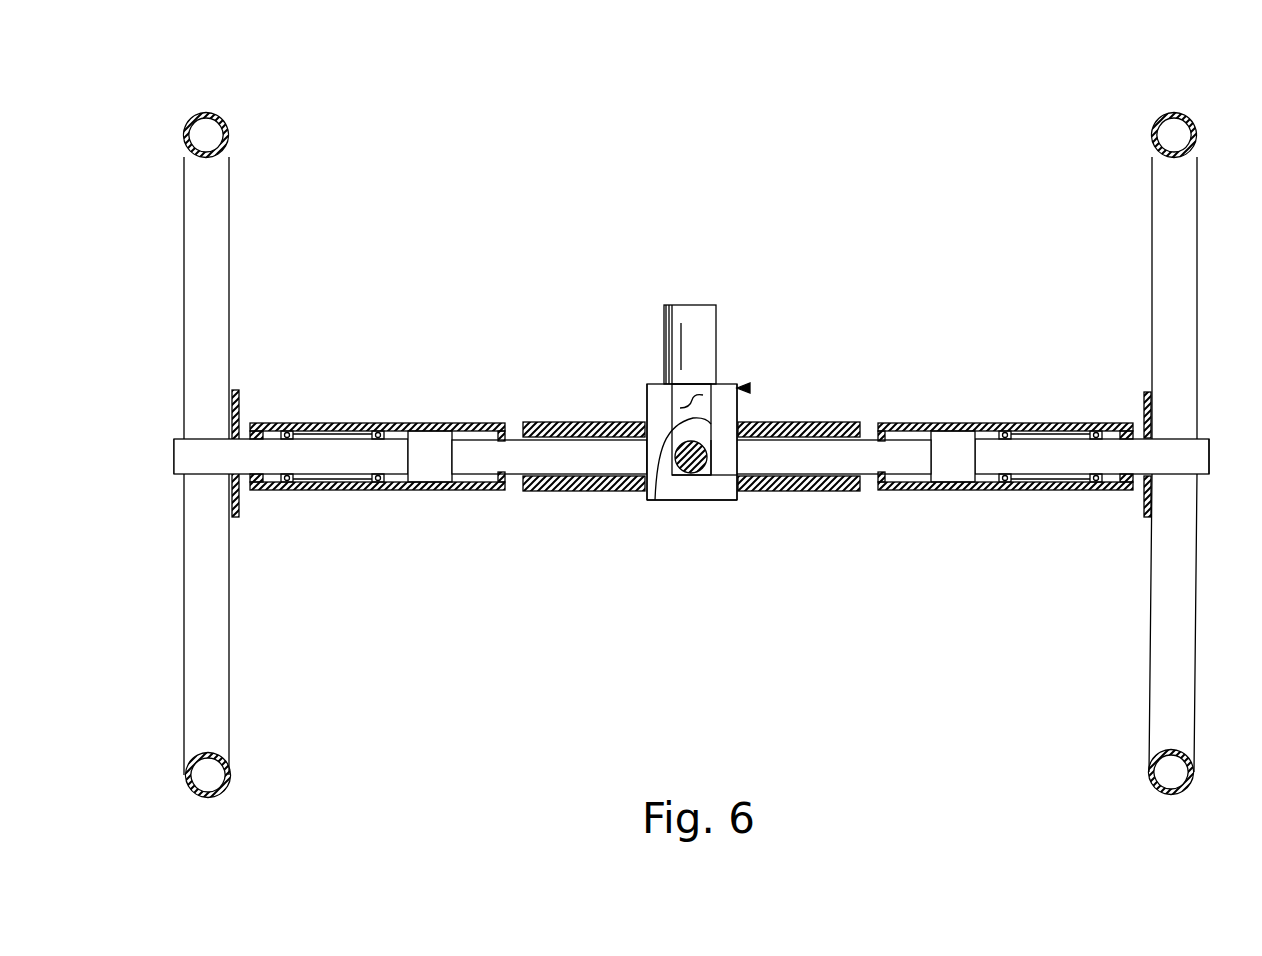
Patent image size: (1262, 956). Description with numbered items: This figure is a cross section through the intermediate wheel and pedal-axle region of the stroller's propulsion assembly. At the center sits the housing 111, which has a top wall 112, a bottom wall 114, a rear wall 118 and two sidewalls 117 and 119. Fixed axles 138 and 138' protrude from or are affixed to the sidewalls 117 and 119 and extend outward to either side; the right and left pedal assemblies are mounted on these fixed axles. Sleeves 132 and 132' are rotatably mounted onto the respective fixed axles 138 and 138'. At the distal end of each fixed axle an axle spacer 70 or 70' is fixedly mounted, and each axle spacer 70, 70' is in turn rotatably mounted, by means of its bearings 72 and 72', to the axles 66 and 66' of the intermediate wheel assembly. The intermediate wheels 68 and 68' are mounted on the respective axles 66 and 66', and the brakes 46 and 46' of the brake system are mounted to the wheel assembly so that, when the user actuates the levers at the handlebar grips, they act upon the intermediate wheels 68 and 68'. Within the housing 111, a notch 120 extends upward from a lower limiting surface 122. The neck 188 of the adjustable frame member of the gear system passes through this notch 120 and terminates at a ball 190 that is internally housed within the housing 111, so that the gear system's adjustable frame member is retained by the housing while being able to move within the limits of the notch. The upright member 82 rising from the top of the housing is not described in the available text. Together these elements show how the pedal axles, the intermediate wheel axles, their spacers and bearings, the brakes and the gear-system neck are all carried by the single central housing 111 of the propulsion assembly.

The axle 66' is at (201, 274).
The intermediate wheel 68' is at (261, 435).
The brake 46' is at (252, 362).
The bearings 72' is at (364, 458).
The axle spacer 70' is at (377, 334).
The sleeve 132' is at (584, 334).
The fixed axle 138' is at (410, 517).
The sidewall 117 is at (647, 404).
The top wall 112 is at (655, 384).
The mounting post 82 is at (708, 325).
The housing 111 is at (737, 412).
The sidewall 119 is at (750, 389).
The sleeve 132 is at (840, 335).
The axle spacer 70 is at (1005, 334).
The brake 46 is at (1119, 375).
The bearings 72 is at (1016, 483).
The intermediate wheel 68 is at (1126, 434).
The axle 66 is at (1217, 274).
The fixed axle 138 is at (972, 490).
The rear wall 118 is at (725, 477).
The notch 120 is at (700, 405).
The lower limiting surface 122 is at (690, 465).
The neck 188 is at (707, 477).
The bottom wall 114 is at (655, 500).
The ball 190 is at (657, 500).